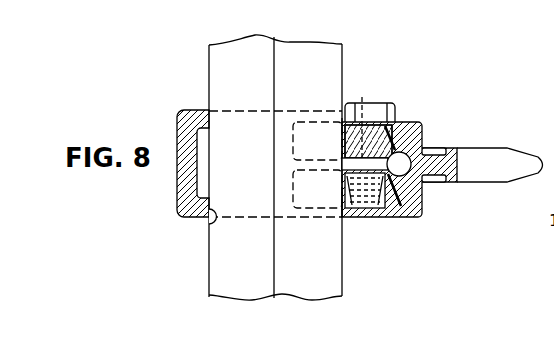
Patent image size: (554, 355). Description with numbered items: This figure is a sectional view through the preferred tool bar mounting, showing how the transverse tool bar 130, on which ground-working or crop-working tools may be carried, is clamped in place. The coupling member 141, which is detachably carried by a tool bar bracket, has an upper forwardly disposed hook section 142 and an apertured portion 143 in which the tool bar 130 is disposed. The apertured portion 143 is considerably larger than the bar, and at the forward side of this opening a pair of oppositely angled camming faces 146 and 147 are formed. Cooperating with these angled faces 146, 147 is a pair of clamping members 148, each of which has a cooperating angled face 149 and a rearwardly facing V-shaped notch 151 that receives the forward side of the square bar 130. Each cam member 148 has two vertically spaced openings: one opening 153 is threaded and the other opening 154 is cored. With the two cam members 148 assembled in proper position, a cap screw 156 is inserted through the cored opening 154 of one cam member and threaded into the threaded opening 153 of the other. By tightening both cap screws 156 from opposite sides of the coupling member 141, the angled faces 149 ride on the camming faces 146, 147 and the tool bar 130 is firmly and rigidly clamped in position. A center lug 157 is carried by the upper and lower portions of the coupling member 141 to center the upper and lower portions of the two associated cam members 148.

The tool bar 130 is at (288, 299).
The coupling member 141 is at (172, 197).
The hook section 142 is at (528, 158).
The apertured portion 143 is at (207, 221).
The camming face 146 is at (401, 128).
The camming face 147 is at (388, 214).
The clamping member 148 is at (342, 118).
The angled face 149 is at (421, 131).
The V-shaped notch 151 is at (343, 138).
The threaded opening 153 is at (365, 210).
The cored opening 154 is at (355, 122).
The cap screw 156 is at (377, 112).
The center lug 157 is at (331, 166).